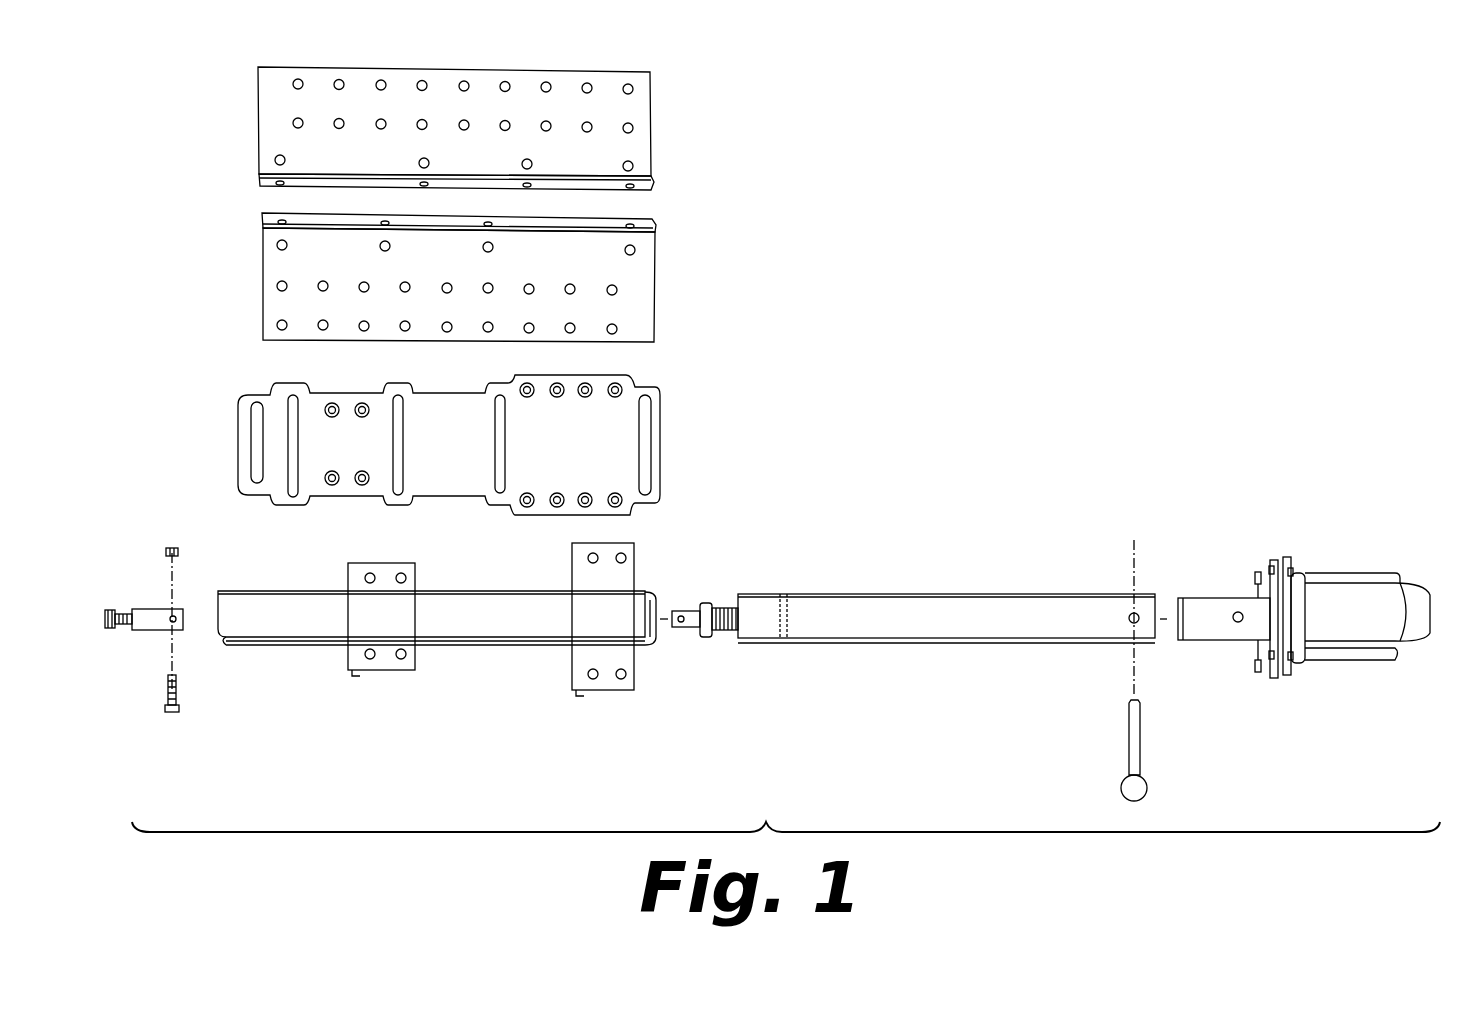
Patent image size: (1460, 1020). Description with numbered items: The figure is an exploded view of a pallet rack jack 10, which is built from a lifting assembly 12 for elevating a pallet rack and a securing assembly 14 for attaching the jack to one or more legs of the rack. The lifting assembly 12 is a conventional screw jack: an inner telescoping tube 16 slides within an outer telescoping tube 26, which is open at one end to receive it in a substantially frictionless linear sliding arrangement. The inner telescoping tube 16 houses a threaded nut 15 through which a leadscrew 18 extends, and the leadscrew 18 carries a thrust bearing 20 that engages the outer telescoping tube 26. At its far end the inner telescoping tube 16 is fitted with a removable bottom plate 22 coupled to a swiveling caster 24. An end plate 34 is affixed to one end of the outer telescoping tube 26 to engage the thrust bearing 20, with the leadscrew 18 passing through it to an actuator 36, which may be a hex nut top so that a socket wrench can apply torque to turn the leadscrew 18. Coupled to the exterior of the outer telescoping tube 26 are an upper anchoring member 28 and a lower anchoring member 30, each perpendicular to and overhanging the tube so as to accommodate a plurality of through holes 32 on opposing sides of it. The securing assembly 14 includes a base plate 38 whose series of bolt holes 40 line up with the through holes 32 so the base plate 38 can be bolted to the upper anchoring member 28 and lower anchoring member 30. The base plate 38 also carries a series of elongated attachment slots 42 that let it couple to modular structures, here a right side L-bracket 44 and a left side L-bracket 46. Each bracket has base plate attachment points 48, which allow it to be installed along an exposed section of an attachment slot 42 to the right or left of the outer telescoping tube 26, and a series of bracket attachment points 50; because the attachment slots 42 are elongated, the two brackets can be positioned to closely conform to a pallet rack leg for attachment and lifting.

The pallet rack jack 10 is at (1052, 177).
The lifting assembly 12 is at (772, 403).
The securing assembly 14 is at (772, 210).
The threaded nut 15 is at (790, 630).
The inner telescoping tube 16 is at (952, 670).
The leadscrew 18 is at (725, 632).
The thrust bearing 20 is at (702, 638).
The bottom plate 22 is at (1270, 575).
The swiveling caster 24 is at (1333, 577).
The outer telescoping tube 26 is at (427, 659).
The upper anchoring member 28 is at (385, 672).
The lower anchoring member 30 is at (603, 690).
The through holes 32 is at (365, 654).
The end plate 34 is at (218, 625).
The actuator 36 is at (118, 630).
The base plate 38 is at (450, 447).
The bolt holes 40 is at (617, 388).
The attachment slots 42 is at (291, 412).
The right side L-bracket 44 is at (260, 312).
The left side L-bracket 46 is at (452, 170).
The base plate attachment points 48 is at (630, 190).
The bracket attachment points 50 is at (505, 80).